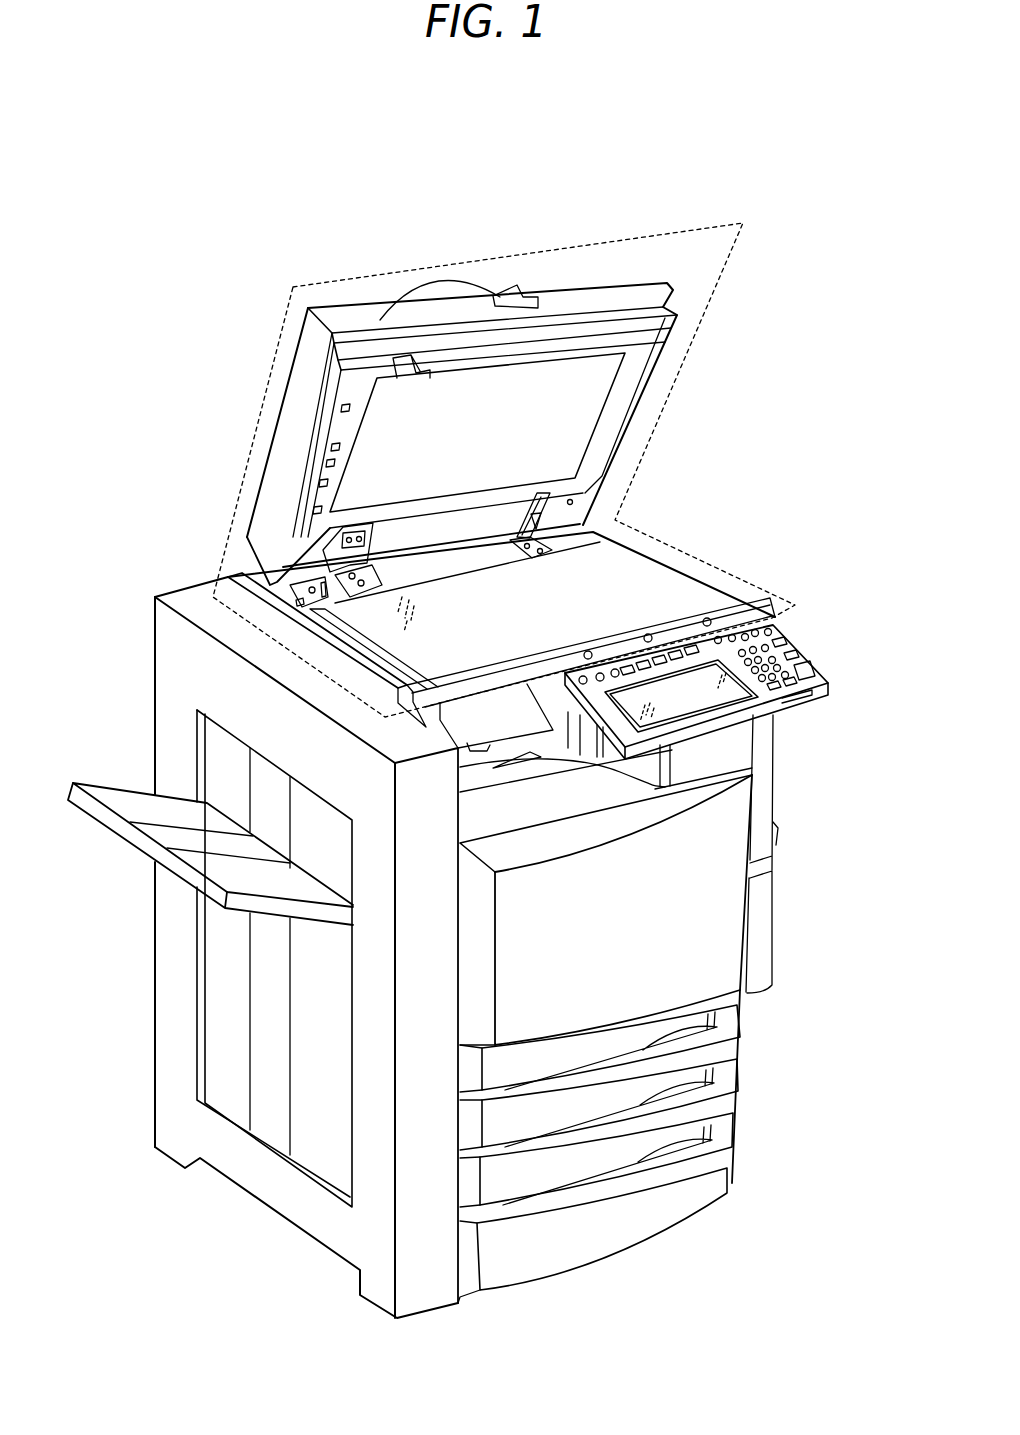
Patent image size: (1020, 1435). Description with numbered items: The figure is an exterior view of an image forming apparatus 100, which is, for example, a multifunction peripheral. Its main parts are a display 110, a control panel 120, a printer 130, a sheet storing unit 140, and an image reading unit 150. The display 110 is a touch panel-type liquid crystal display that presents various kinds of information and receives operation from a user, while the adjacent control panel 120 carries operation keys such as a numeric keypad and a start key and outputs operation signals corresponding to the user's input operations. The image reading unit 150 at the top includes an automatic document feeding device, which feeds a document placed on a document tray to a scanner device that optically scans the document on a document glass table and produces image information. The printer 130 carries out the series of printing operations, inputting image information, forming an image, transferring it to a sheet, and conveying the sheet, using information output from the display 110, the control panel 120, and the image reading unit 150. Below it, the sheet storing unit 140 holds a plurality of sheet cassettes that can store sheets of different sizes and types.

The image forming apparatus 100 is at (514, 166).
The display 110 is at (712, 673).
The control panel 120 is at (805, 667).
The printer 130 is at (720, 936).
The sheet storing unit 140 is at (757, 997).
The image reading unit 150 is at (677, 232).